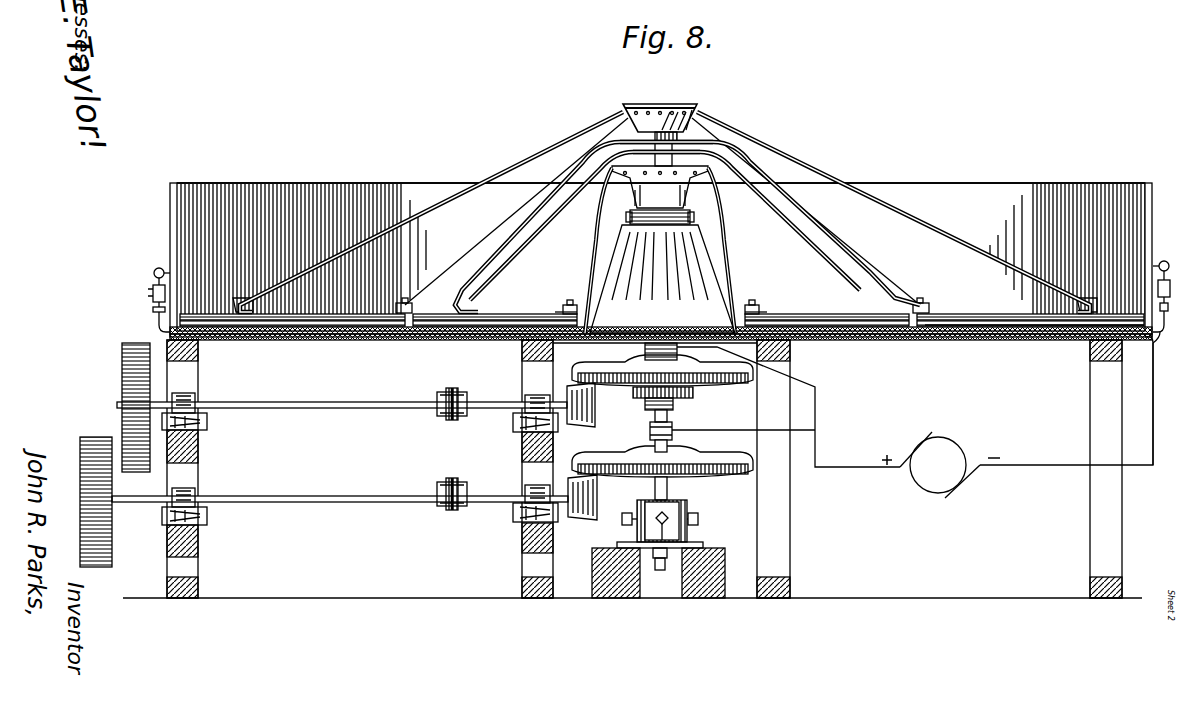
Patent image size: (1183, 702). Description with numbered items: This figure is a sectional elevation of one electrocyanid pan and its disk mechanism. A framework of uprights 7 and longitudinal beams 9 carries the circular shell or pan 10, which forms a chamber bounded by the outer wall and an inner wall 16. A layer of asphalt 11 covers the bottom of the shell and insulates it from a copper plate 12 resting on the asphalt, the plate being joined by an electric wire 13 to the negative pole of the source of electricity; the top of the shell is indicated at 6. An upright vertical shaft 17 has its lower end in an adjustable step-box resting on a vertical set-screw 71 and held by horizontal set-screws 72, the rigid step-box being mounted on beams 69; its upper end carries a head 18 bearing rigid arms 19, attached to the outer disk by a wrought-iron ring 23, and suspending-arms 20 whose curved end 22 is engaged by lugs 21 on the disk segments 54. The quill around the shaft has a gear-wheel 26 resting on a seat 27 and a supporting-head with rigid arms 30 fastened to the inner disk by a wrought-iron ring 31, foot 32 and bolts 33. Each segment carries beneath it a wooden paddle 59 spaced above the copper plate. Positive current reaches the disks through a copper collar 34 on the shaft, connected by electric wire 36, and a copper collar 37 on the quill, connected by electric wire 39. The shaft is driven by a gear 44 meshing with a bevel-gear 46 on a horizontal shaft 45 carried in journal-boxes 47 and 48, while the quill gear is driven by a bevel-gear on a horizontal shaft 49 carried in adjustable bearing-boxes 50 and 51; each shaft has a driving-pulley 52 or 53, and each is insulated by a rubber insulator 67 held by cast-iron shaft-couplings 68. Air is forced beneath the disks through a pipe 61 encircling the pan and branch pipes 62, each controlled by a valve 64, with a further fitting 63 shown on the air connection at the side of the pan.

The casing top 6 is at (661, 166).
The uprights 7 is at (198, 470).
The longitudinal beams 9 is at (198, 355).
The circular shell or pan 10 is at (168, 190).
The layer of asphalt 11 is at (398, 340).
The copper plate 12 is at (350, 334).
The electric wire 13 is at (1153, 404).
The inner wall 16 is at (662, 271).
The upright vertical shaft 17 is at (655, 445).
The head 18 is at (668, 108).
The rigid arms 19 is at (587, 152).
The suspending-arms 20 is at (425, 212).
The lugs 21 is at (1034, 308).
The curved end 22 is at (242, 297).
The wrought-iron ring 23 is at (404, 303).
The gear-wheel 26 is at (740, 384).
The seat 27 is at (680, 393).
The rigid arms 30 is at (603, 208).
The wrought-iron ring 31 is at (632, 300).
The foot 32 is at (562, 310).
The bolts 33 is at (570, 300).
The copper ring or collar 34 is at (650, 430).
The electric wire 36 is at (722, 430).
The copper ring or collar 37 is at (645, 353).
The electric wire 39 is at (816, 406).
The gear 44 is at (600, 455).
The horizontal shaft 45 is at (493, 502).
The bevel-gear 46 is at (596, 497).
The journal-box 47 is at (518, 520).
The journal-box 48 is at (205, 515).
The horizontal shaft 49 is at (493, 409).
The adjustable bearing-box 50 is at (532, 400).
The adjustable bearing-box 51 is at (198, 403).
The driving-pulley 52 is at (112, 528).
The driving-pulley 53 is at (122, 352).
The segments 54 is at (364, 314).
The paddle 59 is at (315, 314).
The pipe 61 is at (155, 268).
The branch pipes 62 is at (153, 317).
The fitting 63 is at (1158, 268).
The valve 64 is at (148, 293).
The rubber insulator 67 is at (452, 390).
The cast-iron shaft-couplings 68 is at (446, 410).
The beams 69 is at (690, 590).
The vertical set-screw 71 is at (659, 568).
The horizontal set-screws 72 is at (622, 520).